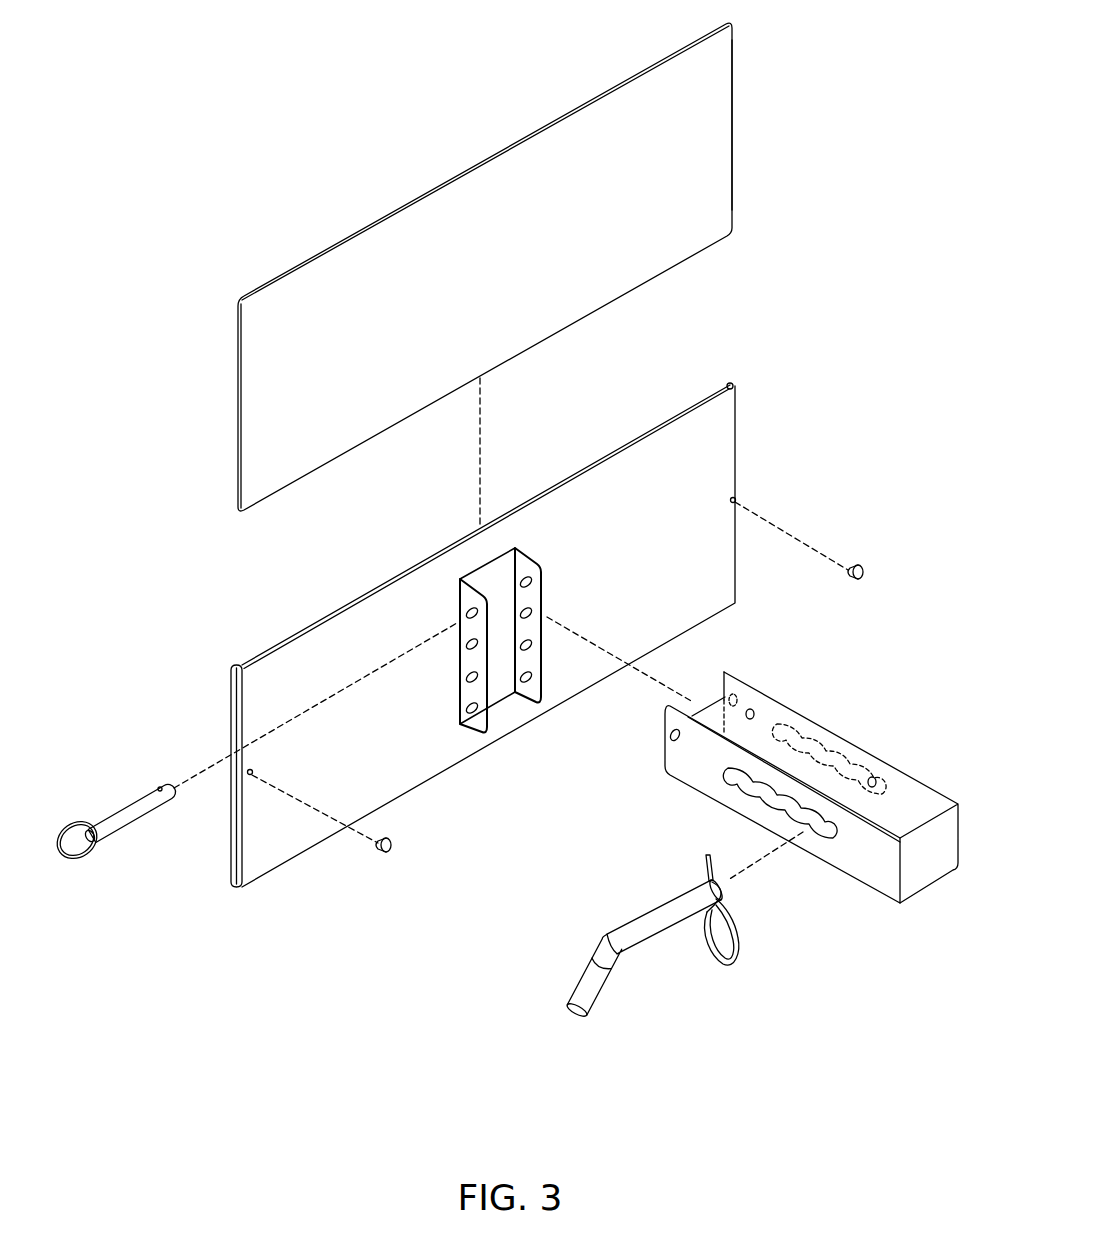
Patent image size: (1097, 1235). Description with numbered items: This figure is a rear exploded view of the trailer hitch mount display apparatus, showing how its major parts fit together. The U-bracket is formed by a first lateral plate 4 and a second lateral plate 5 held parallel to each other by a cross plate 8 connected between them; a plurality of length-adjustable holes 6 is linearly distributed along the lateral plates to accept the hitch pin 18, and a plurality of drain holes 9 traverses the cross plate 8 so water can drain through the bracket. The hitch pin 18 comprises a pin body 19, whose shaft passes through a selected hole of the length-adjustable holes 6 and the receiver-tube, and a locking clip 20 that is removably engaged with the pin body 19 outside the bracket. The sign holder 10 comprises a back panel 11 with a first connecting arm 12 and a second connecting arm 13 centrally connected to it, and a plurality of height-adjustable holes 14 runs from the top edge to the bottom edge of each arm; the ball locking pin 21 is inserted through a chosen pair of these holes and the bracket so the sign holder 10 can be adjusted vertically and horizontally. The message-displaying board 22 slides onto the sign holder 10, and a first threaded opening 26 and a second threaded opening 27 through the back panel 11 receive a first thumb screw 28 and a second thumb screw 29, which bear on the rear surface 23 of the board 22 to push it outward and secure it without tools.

The first lateral plate 4 is at (893, 893).
The second lateral plate 5 is at (945, 860).
The plurality of length-adjustable holes 6 is at (727, 779).
The cross plate 8 is at (832, 745).
The plurality of drain holes 9 is at (753, 707).
The sign holder 10 is at (474, 635).
The back panel 11 is at (731, 432).
The first connecting arm 12 is at (466, 606).
The second connecting arm 13 is at (546, 575).
The plurality of height-adjustable holes 14 is at (517, 583).
The hitch pin 18 is at (600, 972).
The pin body 19 is at (650, 912).
The locking clip 20 is at (720, 962).
The ball locking pin 21 is at (138, 782).
The message-displaying board 22 is at (496, 147).
The rear surface 23 is at (728, 188).
The first threaded opening 26 is at (256, 770).
The second threaded opening 27 is at (741, 500).
The first thumb screw 28 is at (377, 850).
The second thumb screw 29 is at (850, 578).